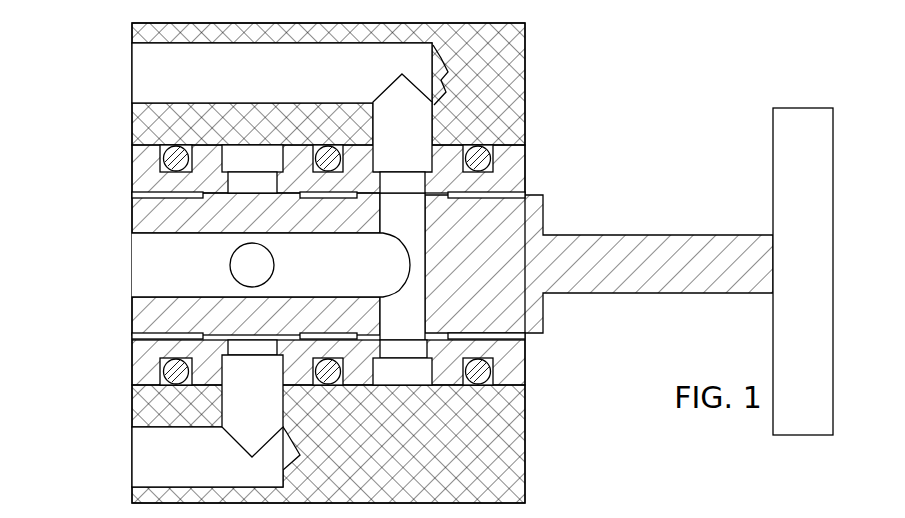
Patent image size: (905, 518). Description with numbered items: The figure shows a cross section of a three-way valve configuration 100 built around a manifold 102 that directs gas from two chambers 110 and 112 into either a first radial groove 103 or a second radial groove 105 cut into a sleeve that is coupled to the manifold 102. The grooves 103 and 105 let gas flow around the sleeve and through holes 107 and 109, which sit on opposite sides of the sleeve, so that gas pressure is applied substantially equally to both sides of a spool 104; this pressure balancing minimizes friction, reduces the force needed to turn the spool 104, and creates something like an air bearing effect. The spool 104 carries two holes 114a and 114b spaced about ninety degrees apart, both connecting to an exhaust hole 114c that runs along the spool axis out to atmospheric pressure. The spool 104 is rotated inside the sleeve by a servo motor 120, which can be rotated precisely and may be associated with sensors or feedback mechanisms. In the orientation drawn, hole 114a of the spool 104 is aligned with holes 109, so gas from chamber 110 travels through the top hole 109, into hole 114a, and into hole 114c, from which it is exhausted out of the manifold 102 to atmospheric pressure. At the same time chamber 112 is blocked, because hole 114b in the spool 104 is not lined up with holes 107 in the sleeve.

The 3-way valve configuration 100 is at (638, 93).
The manifold 102 is at (463, 90).
The first radial groove 103 is at (252, 155).
The spool 104 is at (552, 233).
The second radial groove 105 is at (395, 158).
The holes 107 is at (248, 178).
The holes 109 is at (405, 185).
The chamber 110 is at (198, 85).
The chamber 112 is at (168, 465).
The hole 114a is at (405, 310).
The hole 114b is at (245, 292).
The exhaust hole 114c is at (407, 265).
The servo motor 120 is at (786, 280).